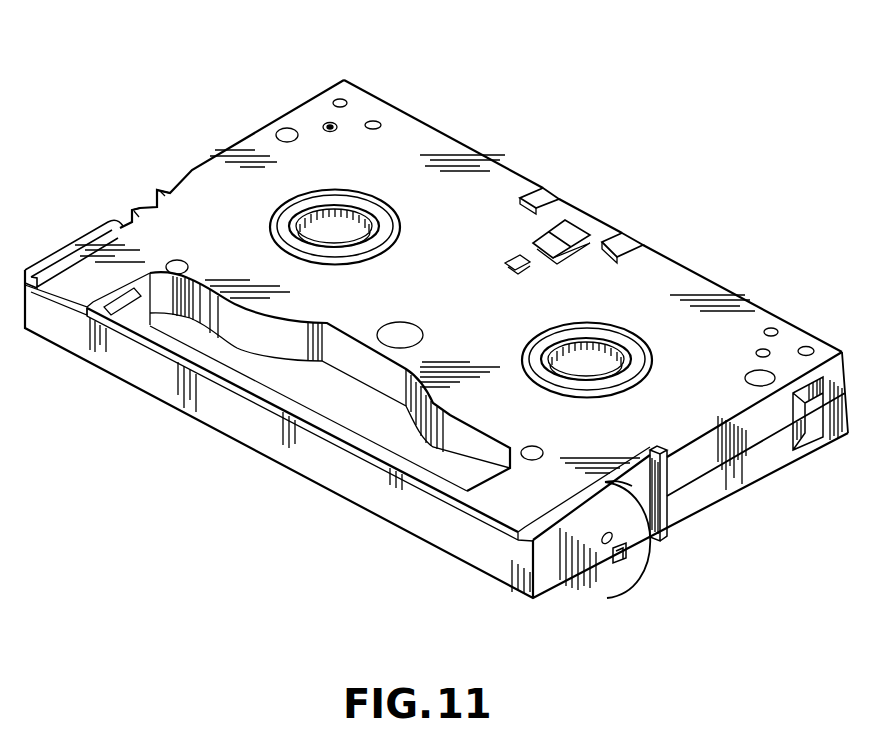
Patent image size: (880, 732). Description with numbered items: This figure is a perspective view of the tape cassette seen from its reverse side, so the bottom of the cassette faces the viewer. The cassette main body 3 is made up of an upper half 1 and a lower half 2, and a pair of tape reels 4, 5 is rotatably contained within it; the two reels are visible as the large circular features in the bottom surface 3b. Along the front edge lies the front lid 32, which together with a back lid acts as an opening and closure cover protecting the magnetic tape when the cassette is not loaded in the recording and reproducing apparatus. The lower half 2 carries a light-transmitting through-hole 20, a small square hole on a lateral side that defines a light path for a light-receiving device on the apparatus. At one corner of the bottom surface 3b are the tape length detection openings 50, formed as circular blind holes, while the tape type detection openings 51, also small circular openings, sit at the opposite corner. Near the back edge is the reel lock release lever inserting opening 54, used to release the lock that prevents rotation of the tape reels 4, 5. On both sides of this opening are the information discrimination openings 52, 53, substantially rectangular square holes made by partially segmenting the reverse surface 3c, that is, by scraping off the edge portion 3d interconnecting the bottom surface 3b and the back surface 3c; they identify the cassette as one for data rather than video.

The upper half 1 is at (758, 465).
The lower half 2 is at (188, 205).
The cassette main body 3 is at (480, 143).
The bottom surface 3b is at (680, 440).
The reverse surface 3c is at (848, 402).
The edge portion 3d is at (407, 108).
The tape reel 4 is at (620, 348).
The tape reel 5 is at (367, 220).
The light-transmitting through-hole 20 is at (622, 556).
The front lid 32 is at (257, 418).
The tape length detection openings 50 is at (373, 120).
The tape type detection openings 51 is at (807, 346).
The information discrimination opening 52 is at (540, 197).
The information discrimination opening 53 is at (632, 238).
The reel lock release lever inserting opening 54 is at (567, 240).